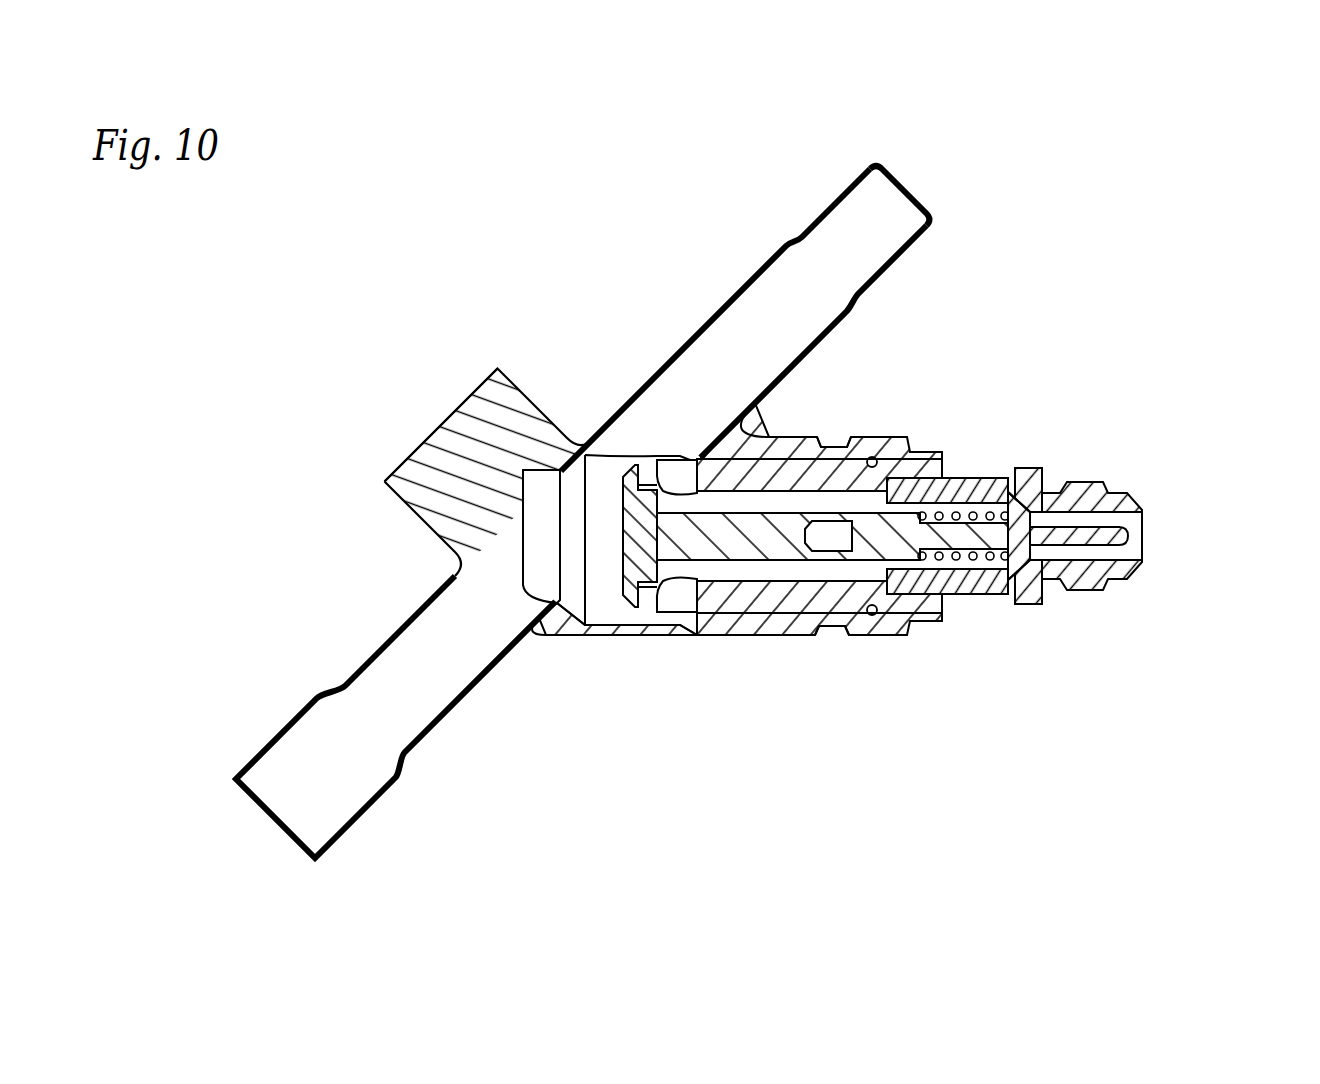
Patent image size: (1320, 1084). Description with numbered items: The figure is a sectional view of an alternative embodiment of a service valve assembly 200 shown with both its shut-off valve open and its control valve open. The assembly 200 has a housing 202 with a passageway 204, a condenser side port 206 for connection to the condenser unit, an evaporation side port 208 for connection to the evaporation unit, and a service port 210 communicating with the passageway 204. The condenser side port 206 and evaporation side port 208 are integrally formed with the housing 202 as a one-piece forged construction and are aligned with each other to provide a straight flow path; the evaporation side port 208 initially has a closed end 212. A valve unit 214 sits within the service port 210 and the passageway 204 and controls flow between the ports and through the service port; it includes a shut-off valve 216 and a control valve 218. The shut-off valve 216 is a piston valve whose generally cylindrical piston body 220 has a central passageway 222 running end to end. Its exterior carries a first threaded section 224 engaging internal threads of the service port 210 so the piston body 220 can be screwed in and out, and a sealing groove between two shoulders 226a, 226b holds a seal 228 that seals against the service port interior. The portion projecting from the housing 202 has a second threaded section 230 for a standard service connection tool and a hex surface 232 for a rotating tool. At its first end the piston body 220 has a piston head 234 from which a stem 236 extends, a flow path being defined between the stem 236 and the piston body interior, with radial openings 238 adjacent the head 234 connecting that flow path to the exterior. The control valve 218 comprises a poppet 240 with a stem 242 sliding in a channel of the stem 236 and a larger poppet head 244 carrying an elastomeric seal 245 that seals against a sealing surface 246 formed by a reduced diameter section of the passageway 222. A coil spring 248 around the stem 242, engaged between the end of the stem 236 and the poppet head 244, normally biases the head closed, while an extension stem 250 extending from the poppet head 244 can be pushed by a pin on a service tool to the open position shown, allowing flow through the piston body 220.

The service valve assembly 200 is at (557, 221).
The housing 202 is at (467, 397).
The passageway 204 is at (600, 590).
The condenser side port 206 is at (448, 728).
The evaporation side port 208 is at (747, 270).
The service port 210 is at (888, 428).
The closed end 212 is at (907, 180).
The valve unit 214 is at (990, 500).
The shut-off valve 216 is at (787, 624).
The control valve 218 is at (983, 557).
The piston body 220 is at (907, 637).
The central passageway 222 is at (1002, 520).
The first threaded section 224 is at (797, 445).
The shoulder 226a is at (857, 637).
The shoulder 226b is at (890, 637).
The seal 228 is at (868, 455).
The second threaded section 230 is at (1092, 482).
The hex surface 232 is at (1018, 570).
The piston head 234 is at (623, 523).
The stem 236 is at (733, 560).
The radial openings 238 is at (672, 477).
The poppet 240 is at (953, 499).
The stem 242 is at (905, 552).
The poppet head 244 is at (1030, 485).
The elastomeric seal 245 is at (1036, 600).
The sealing surface 246 is at (1028, 505).
The coil spring 248 is at (930, 545).
The extension stem 250 is at (1142, 524).